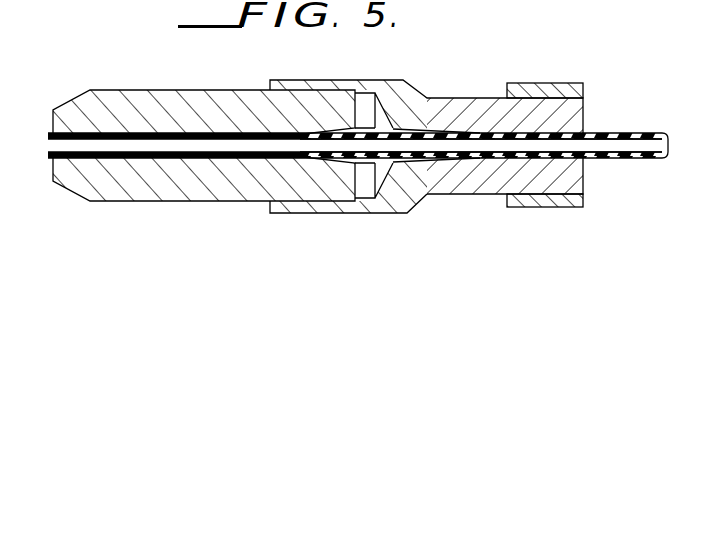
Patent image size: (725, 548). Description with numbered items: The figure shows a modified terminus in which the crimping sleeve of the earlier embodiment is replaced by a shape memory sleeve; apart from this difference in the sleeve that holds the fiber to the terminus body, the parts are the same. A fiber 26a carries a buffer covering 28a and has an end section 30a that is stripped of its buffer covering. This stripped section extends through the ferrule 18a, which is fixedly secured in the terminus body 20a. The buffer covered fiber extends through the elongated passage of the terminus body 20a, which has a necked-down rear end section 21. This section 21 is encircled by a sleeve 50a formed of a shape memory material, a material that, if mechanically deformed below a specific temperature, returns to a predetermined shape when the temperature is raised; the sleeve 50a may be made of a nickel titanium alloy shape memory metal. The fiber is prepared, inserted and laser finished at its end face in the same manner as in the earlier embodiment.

The ferrule 18a is at (190, 97).
The end section 30a is at (141, 148).
The terminus body 20a is at (378, 80).
The necked-down rear end section 21 is at (587, 110).
The sleeve 50a is at (548, 83).
The buffer covering 28a is at (653, 131).
The fiber 26a is at (623, 147).